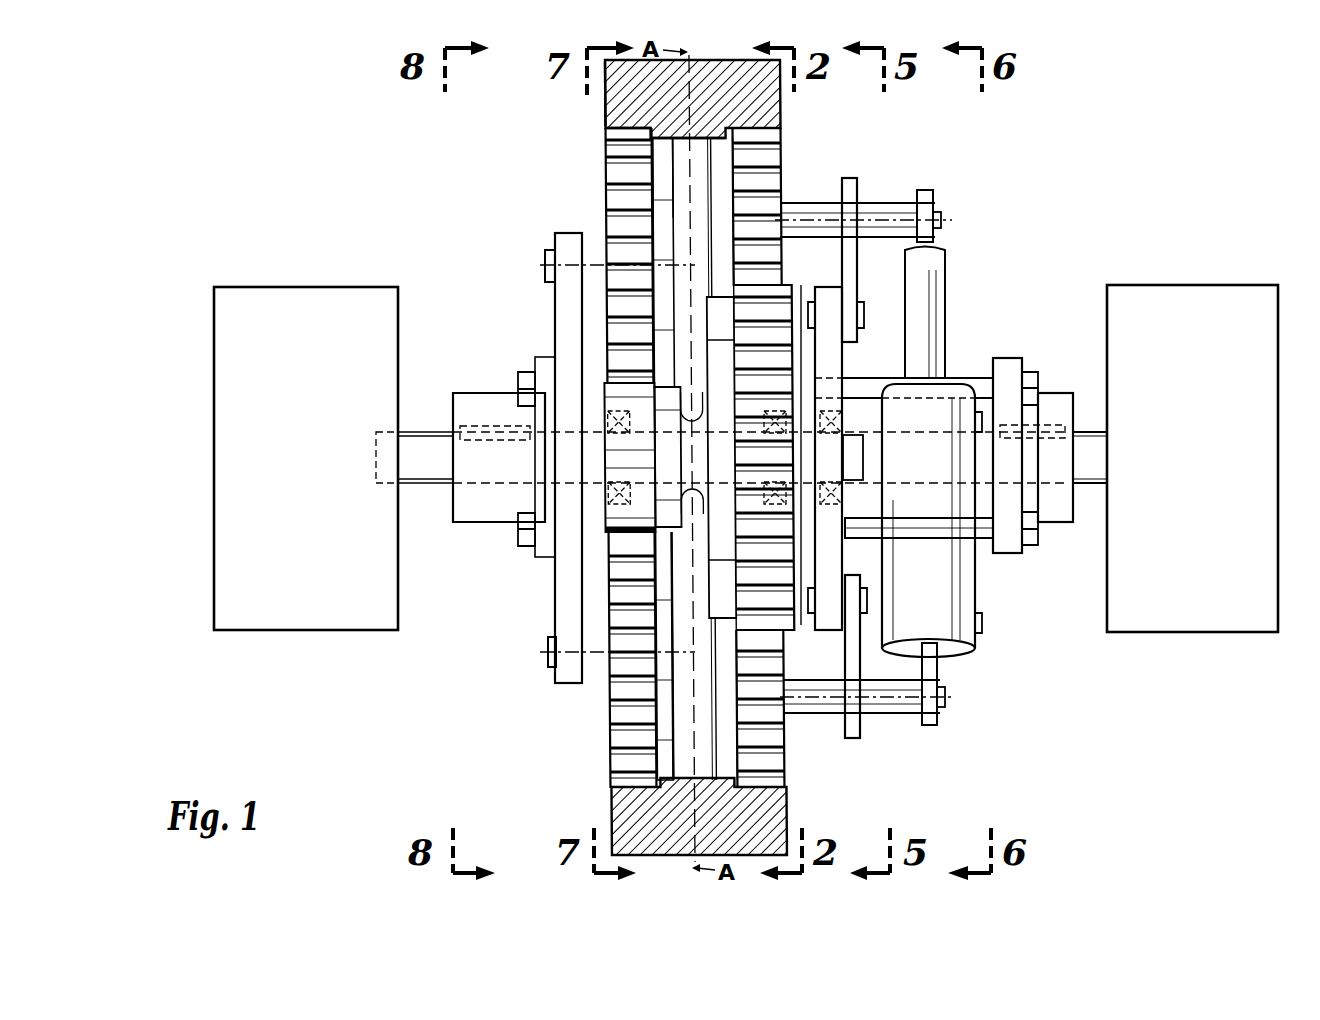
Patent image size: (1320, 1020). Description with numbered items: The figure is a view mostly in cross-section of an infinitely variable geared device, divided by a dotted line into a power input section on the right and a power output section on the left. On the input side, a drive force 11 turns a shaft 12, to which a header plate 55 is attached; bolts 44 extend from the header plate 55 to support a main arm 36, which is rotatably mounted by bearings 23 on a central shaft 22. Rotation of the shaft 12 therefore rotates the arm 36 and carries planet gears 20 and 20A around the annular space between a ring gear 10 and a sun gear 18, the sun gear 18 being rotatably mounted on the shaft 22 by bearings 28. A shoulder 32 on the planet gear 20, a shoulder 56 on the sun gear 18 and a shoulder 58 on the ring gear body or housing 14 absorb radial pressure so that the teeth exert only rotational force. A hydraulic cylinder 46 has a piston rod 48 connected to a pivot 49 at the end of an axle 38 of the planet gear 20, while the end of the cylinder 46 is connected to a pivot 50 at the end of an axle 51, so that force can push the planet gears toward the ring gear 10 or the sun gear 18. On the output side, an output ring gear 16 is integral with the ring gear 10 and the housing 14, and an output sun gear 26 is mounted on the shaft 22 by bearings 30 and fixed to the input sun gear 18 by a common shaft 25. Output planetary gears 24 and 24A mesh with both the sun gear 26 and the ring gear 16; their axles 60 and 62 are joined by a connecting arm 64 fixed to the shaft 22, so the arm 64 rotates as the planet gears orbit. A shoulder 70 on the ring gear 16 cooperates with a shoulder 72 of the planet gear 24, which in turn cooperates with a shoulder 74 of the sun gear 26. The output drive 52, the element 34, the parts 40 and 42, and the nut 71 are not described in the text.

The ring gear 10 is at (762, 104).
The drive force 11 is at (1192, 325).
The shaft 12 is at (1093, 437).
The housing 14 is at (598, 98).
The output ring gear 16 is at (618, 118).
The sun gear 18 is at (775, 378).
The planet gear 20 is at (765, 175).
The planet gear 20A is at (770, 732).
The shaft 22 is at (445, 438).
The bearings 23 is at (835, 497).
The output planetary gear 24 is at (625, 232).
The planet gear 24A is at (625, 757).
The common shaft 25 is at (668, 537).
The sun gear 26 is at (645, 503).
The bearings 28 is at (790, 420).
The bearings 30 is at (612, 420).
The shoulder 32 is at (720, 205).
The bolt 34 is at (688, 262).
The arm 36 is at (835, 620).
The axle 38 is at (882, 203).
The lever arm 40 is at (848, 272).
The pivot pin 42 is at (865, 313).
The bolts 44 is at (965, 380).
The hydraulic cylinder 46 is at (945, 605).
The piston rod 48 is at (938, 327).
The pivot 49 is at (935, 210).
The pivot 50 is at (945, 700).
The axle 51 is at (895, 705).
The output drive 52 is at (335, 305).
The header plate 55 is at (1010, 553).
The shoulder 56 is at (717, 590).
The shoulder 58 is at (718, 135).
The axle 60 is at (592, 281).
The axle 62 is at (600, 680).
The connecting arm 64 is at (563, 345).
The shoulder 70 is at (660, 145).
The nut 71 is at (522, 532).
The shoulder 72 is at (658, 212).
The shoulder 74 is at (665, 516).